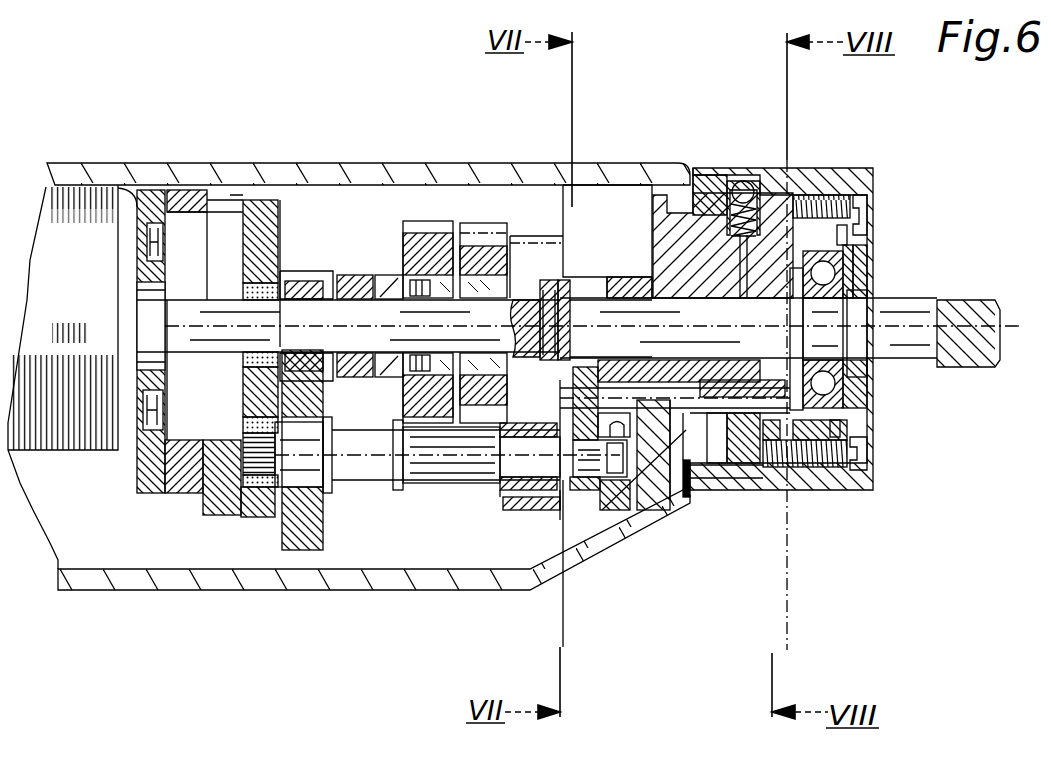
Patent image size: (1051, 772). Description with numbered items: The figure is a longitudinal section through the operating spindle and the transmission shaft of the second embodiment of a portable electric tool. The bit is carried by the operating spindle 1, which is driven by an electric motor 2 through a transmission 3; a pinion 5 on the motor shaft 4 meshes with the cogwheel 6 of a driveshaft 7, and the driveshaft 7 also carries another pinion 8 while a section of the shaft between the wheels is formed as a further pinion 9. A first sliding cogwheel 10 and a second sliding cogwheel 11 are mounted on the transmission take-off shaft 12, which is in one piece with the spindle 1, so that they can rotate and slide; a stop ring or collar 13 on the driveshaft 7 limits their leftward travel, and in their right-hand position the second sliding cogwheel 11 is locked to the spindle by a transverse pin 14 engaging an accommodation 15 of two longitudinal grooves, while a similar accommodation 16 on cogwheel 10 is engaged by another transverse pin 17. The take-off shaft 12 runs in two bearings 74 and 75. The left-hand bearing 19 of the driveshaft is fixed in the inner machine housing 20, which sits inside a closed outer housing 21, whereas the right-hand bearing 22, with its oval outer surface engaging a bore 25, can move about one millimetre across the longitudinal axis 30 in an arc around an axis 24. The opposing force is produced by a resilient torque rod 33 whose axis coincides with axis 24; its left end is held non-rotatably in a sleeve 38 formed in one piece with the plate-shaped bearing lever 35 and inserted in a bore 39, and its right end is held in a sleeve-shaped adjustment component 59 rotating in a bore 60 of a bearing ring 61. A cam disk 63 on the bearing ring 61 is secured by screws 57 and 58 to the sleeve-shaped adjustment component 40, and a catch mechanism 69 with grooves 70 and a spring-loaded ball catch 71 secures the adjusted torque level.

The operating spindle 1 is at (913, 300).
The electric motor 2 is at (70, 232).
The transmission 3 is at (458, 205).
The motor shaft 4 is at (213, 310).
The pinion 5 is at (298, 283).
The cogwheel 6 is at (310, 523).
The driveshaft 7 is at (353, 480).
The pinion 8 is at (523, 450).
The pinion 9 is at (497, 440).
The first sliding cogwheel 10 is at (477, 223).
The second sliding cogwheel 11 is at (517, 285).
The transmission take-off shaft 12 is at (447, 275).
The stop ring or collar 13 is at (386, 492).
The transverse pin 14 is at (596, 185).
The accommodation 15 is at (566, 232).
The accommodation 16 is at (431, 478).
The transverse pin 17 is at (403, 283).
The bearing 19 is at (250, 500).
The machine housing 20 is at (258, 210).
The housing 21 is at (612, 181).
The bearing 22 is at (600, 497).
The axis 24 is at (707, 497).
The bore 25 is at (637, 503).
The longitudinal axis 30 is at (547, 430).
The resilient torque rod 33 is at (673, 500).
The bearing lever 35 is at (563, 490).
The sleeve 38 is at (643, 507).
The bore 39 is at (660, 513).
The adjustment component 40 is at (796, 143).
The screw 57 is at (876, 205).
The screw 58 is at (868, 475).
The adjustment component 59 is at (790, 493).
The bore 60 is at (813, 493).
The bearing ring 61 is at (788, 235).
The cam disk 63 is at (836, 225).
The catch mechanism 69 is at (746, 180).
The groove 70 is at (737, 160).
The catch 71 is at (780, 262).
The bearing 74 is at (348, 283).
The bearing 75 is at (852, 195).